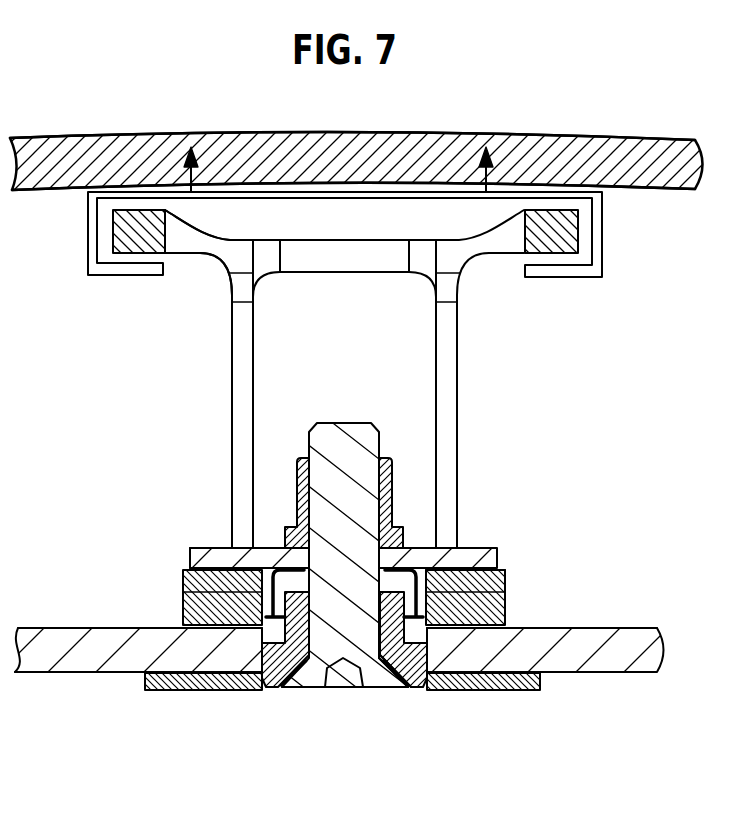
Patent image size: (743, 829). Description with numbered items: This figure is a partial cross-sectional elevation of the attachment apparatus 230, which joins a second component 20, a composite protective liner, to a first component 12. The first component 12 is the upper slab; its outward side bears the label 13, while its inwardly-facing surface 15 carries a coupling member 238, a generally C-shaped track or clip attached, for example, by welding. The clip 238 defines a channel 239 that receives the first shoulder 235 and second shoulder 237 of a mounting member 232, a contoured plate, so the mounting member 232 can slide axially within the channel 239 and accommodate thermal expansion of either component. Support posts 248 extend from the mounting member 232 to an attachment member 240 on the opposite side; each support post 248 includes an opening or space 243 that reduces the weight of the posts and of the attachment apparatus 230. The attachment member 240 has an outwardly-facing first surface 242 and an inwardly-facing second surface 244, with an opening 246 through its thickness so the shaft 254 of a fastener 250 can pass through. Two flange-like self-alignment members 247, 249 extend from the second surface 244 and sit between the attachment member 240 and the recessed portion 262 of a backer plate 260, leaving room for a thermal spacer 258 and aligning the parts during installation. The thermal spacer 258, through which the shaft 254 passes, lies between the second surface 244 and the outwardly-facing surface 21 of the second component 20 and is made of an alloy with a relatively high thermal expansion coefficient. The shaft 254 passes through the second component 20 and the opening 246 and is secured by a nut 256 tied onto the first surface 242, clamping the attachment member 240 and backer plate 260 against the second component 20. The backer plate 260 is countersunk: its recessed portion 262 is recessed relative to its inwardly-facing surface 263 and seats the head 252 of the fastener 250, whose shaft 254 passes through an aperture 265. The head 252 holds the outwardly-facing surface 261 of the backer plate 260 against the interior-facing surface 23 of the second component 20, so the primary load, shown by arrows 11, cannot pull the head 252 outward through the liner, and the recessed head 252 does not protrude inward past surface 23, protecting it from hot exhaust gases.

The primary load arrows 11 is at (191, 188).
The first component 12 is at (591, 168).
The upper surface of support structure 13 is at (150, 137).
The inwardly-facing surface 15 is at (48, 190).
The second component 20 is at (37, 675).
The outwardly-facing surface 21 is at (60, 637).
The interior-facing surface 23 is at (82, 672).
The attachment apparatus 230 is at (140, 390).
The mounting member 232 is at (352, 222).
The first shoulder 235 is at (173, 237).
The second shoulder 237 is at (527, 252).
The coupling member 238 is at (93, 232).
The channel 239 is at (103, 245).
The attachment member 240 is at (521, 558).
The first surface 242 is at (204, 548).
The opening or space 243 is at (372, 418).
The second surface 244 is at (190, 566).
The opening 246 is at (405, 548).
The self-alignment member 247 is at (183, 586).
The support posts 248 is at (450, 470).
The self-alignment member 249 is at (505, 594).
The fastener 250 is at (348, 400).
The head 252 is at (300, 682).
The shaft 254 is at (318, 447).
The nut 256 is at (390, 510).
The thermal spacer 258 is at (506, 573).
The backer plate 260 is at (550, 700).
The outwardly-facing surface 261 is at (163, 660).
The recessed portion 262 is at (417, 667).
The inwardly-facing surface 263 is at (178, 691).
The aperture 265 is at (277, 688).